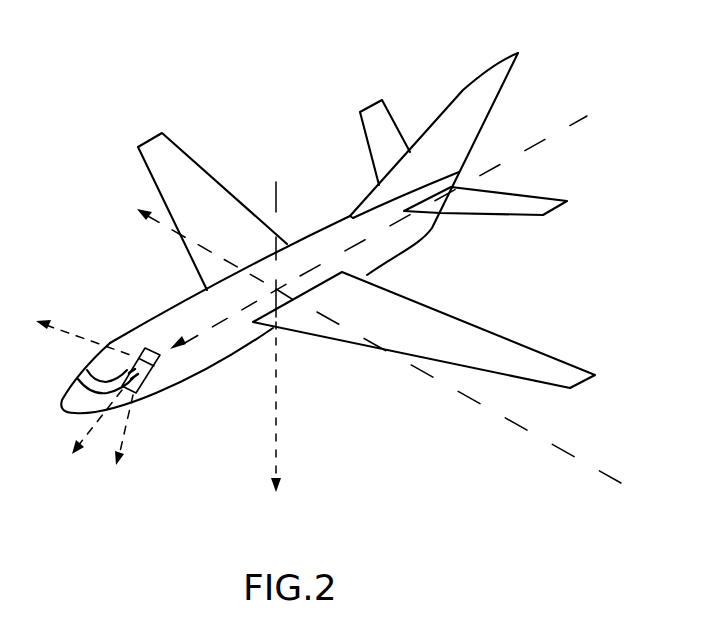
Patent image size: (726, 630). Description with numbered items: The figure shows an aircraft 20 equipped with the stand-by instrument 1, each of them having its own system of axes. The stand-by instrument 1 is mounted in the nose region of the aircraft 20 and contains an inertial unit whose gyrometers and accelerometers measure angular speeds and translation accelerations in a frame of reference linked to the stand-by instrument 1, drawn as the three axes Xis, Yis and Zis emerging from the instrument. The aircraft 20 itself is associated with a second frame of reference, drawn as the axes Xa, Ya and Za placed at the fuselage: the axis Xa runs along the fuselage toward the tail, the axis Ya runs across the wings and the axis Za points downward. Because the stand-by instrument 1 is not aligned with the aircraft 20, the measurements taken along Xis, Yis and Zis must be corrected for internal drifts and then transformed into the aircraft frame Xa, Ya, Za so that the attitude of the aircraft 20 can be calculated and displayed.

The stand-by instrument 1 is at (148, 393).
The aircraft 20 is at (328, 233).
The aircraft frame of reference X axis Xa is at (378, 232).
The aircraft frame of reference Y axis Ya is at (371, 346).
The aircraft frame of reference Z axis Za is at (295, 344).
The stand-by instrument frame of reference X axis Xis is at (86, 439).
The stand-by instrument frame of reference Y axis Yis is at (83, 323).
The stand-by instrument frame of reference Z axis Zis is at (120, 448).